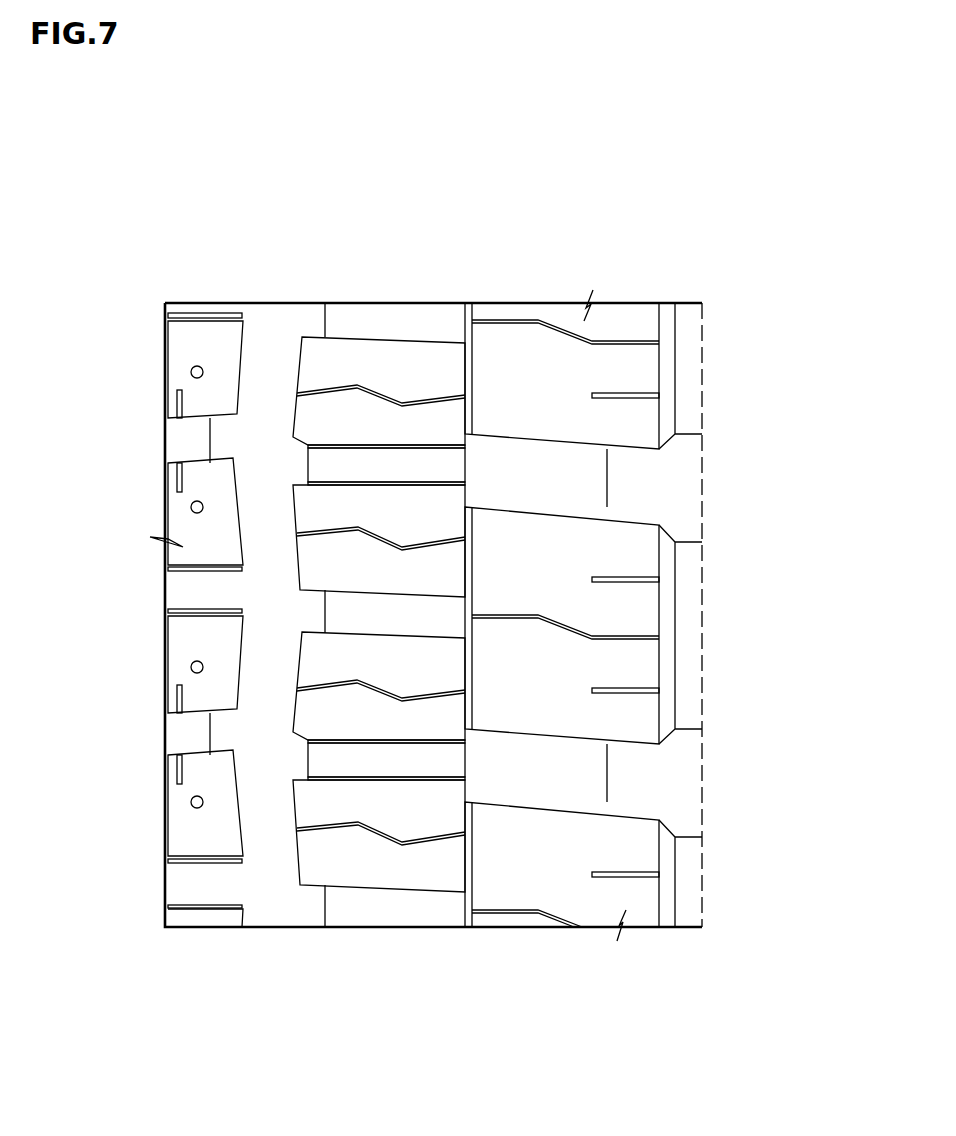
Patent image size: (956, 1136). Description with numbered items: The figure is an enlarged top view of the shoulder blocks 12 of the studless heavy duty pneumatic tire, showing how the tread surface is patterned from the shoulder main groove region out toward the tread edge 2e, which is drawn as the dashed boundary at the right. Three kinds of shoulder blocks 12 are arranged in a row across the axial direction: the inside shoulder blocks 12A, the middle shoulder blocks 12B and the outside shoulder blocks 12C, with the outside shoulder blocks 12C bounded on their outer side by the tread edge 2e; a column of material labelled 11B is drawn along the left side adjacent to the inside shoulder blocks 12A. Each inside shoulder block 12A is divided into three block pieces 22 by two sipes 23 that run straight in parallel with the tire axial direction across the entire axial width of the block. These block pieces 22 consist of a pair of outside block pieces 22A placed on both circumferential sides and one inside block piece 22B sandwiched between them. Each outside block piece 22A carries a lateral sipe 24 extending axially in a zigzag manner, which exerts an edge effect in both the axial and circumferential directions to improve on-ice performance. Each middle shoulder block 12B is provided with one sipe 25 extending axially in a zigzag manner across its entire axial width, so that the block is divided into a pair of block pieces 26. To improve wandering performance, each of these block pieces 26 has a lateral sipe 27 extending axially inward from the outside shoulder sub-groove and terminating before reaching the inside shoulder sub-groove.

The tread edge 2e is at (703, 338).
The second frame member 11B is at (200, 880).
The shoulder block 12 is at (403, 669).
The inside shoulder block 12A is at (432, 862).
The middle shoulder block 12B is at (618, 646).
The outside shoulder block 12C is at (684, 646).
The block piece 22 is at (250, 611).
The outside block piece 22A is at (342, 371).
The inside block piece 22B is at (347, 473).
The sipe 23 is at (352, 445).
The lateral sipe 24 is at (380, 695).
The sipe 25 is at (627, 635).
The block piece 26 is at (613, 368).
The lateral sipe 27 is at (620, 398).